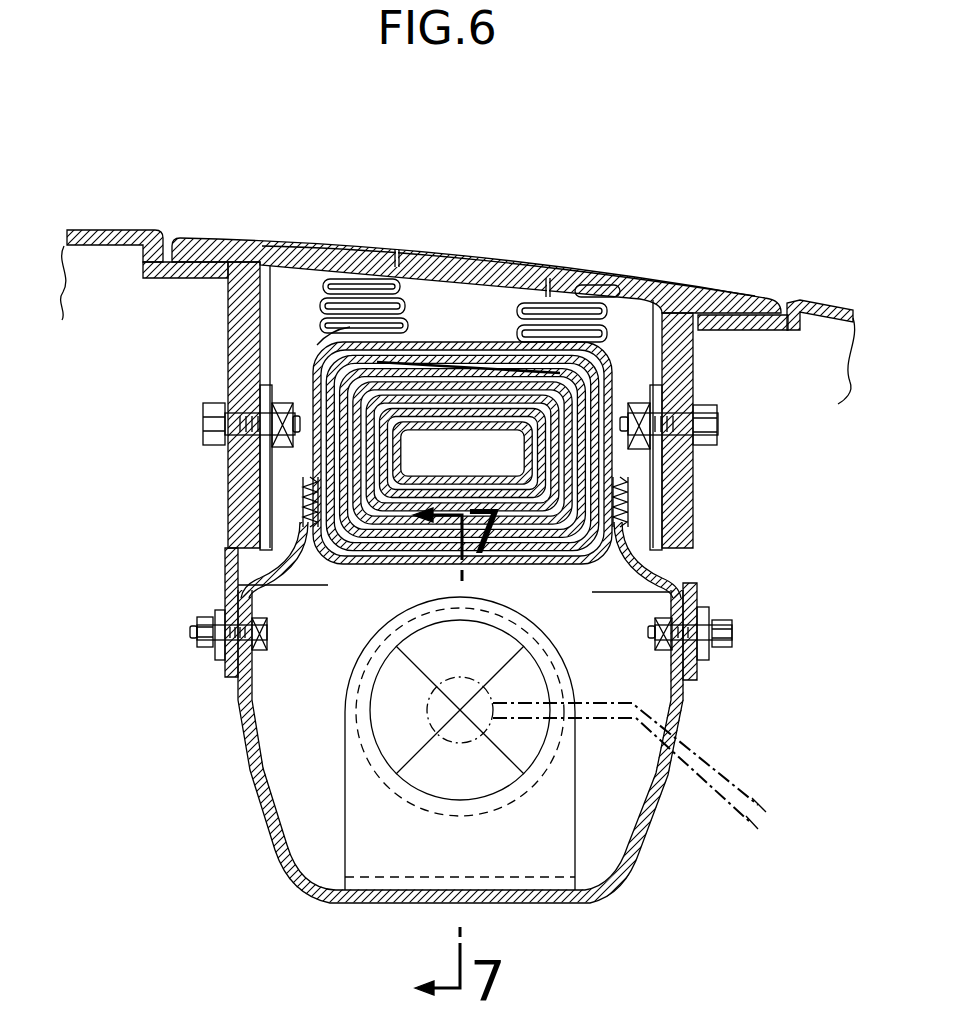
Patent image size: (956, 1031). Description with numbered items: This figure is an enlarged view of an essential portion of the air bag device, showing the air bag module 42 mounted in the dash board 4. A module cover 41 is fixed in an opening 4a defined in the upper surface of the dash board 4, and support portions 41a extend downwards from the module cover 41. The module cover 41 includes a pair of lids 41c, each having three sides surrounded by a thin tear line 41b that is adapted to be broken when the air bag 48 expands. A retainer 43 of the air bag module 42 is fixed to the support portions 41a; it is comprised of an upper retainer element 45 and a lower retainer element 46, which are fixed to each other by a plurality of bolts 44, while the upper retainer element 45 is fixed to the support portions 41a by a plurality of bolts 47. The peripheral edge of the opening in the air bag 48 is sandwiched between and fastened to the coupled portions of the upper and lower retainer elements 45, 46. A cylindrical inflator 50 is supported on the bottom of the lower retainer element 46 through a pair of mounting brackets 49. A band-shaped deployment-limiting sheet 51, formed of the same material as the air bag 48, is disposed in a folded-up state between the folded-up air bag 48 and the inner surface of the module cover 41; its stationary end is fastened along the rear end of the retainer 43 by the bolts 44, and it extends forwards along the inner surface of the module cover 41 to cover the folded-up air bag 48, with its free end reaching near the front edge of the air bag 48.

The dash board 4 is at (117, 231).
The opening 4a is at (232, 290).
The module cover 41 is at (456, 349).
The support portions 41a is at (232, 504).
The tear line 41b is at (470, 262).
The lids 41c is at (397, 262).
The air bag module 42 is at (240, 767).
The retainer 43 is at (535, 611).
The bolts 44 is at (200, 627).
The upper retainer element 45 is at (692, 562).
The lower retainer element 46 is at (800, 573).
The bolts 47 is at (205, 418).
The air bag 48 is at (482, 434).
The mounting brackets 49 is at (562, 835).
The inflator 50 is at (392, 716).
The deployment-limiting sheet 51 is at (605, 382).